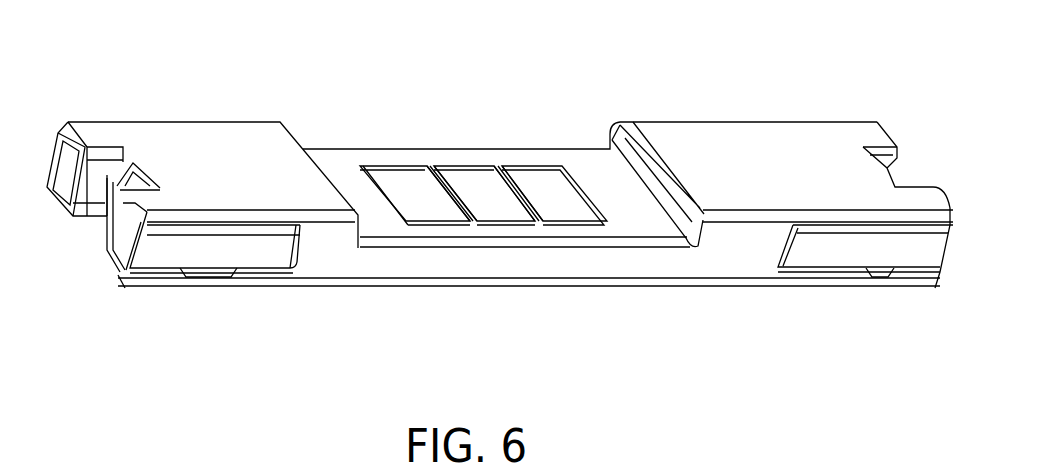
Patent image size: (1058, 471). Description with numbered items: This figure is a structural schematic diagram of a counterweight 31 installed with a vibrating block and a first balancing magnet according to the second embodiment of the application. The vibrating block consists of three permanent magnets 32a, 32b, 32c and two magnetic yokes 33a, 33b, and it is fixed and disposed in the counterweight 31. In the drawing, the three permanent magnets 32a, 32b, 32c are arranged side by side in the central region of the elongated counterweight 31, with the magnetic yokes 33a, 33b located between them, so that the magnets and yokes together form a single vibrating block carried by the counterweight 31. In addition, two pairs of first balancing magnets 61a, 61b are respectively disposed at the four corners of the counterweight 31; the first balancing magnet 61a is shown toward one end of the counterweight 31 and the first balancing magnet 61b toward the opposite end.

The counterweight 31 is at (612, 265).
The permanent magnet 32a is at (403, 187).
The permanent magnet 32b is at (475, 187).
The permanent magnet 32c is at (545, 187).
The magnetic yoke 33a is at (467, 223).
The magnetic yoke 33b is at (530, 223).
The first balancing magnet 61a is at (217, 250).
The first balancing magnet 61b is at (897, 255).